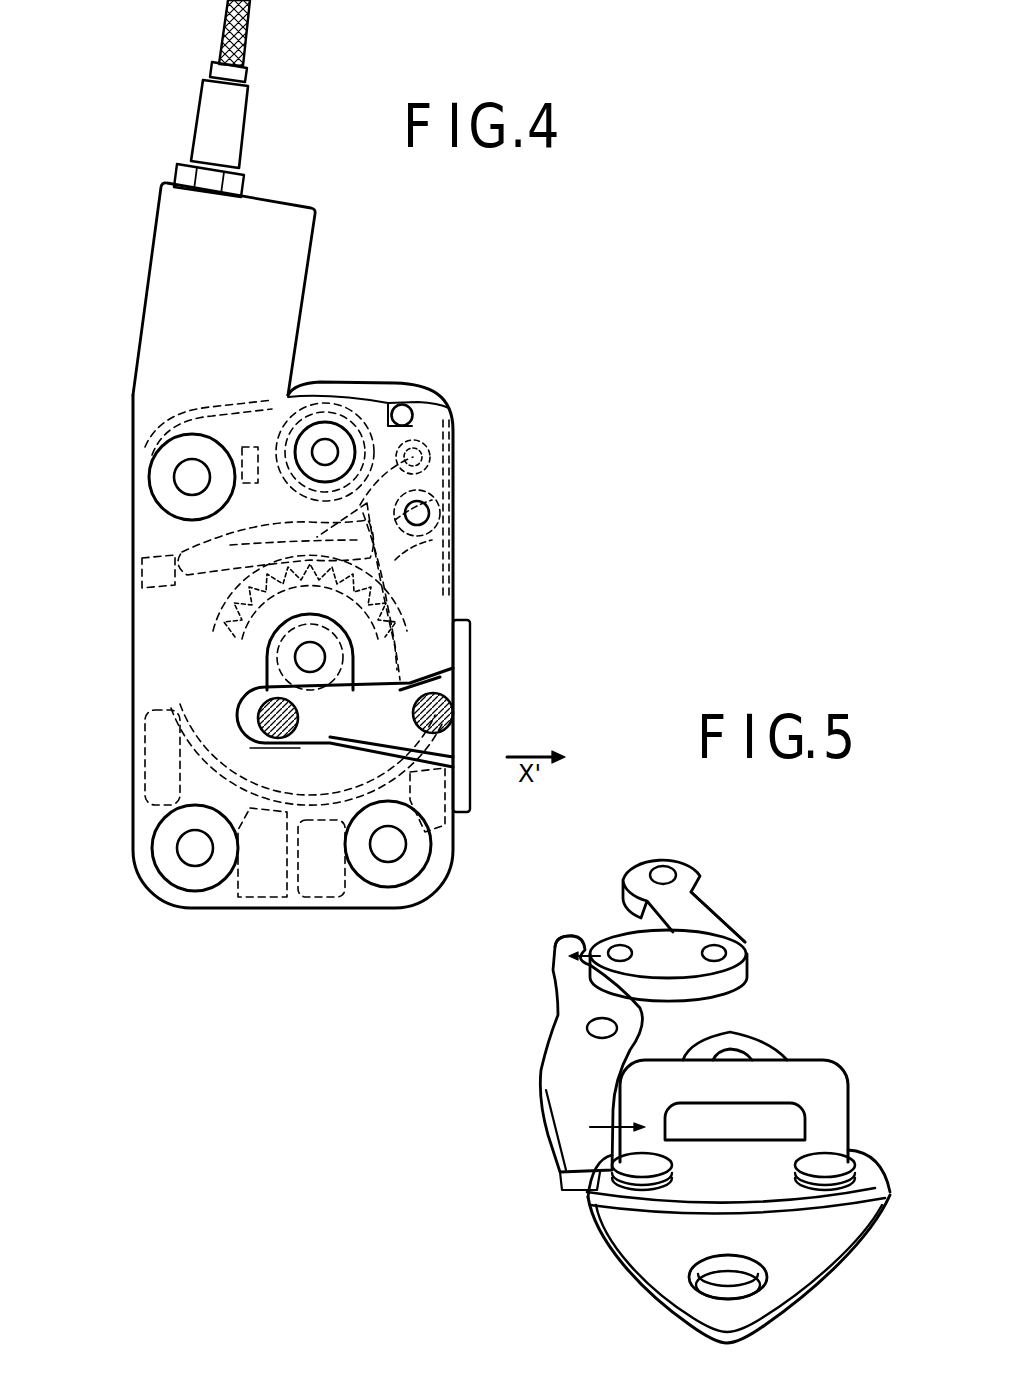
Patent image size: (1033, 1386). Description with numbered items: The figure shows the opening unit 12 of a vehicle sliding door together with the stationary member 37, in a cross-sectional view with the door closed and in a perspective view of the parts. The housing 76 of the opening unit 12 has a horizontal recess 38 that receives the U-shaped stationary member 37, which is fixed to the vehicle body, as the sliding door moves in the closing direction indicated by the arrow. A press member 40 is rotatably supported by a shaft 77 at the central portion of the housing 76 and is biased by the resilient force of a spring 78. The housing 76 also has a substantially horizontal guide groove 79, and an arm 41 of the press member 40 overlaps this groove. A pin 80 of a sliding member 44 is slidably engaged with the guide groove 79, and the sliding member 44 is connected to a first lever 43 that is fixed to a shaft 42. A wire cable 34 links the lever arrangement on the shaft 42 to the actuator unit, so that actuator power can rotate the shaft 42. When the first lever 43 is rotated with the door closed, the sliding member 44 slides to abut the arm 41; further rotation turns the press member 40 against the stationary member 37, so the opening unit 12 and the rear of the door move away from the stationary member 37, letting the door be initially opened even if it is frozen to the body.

In FIG. 4, the opening unit 12 is at (440, 343).
In FIG. 4, the wire cable 34 is at (243, 32).
In FIG. 4, the stationary member 37 is at (432, 712).
In FIG. 5, the stationary member 37 is at (770, 1085).
In FIG. 4, the horizontal recess 38 is at (297, 743).
In FIG. 4, the press member 40 is at (383, 600).
In FIG. 5, the press member 40 is at (575, 1080).
In FIG. 4, the arm 41 is at (367, 503).
In FIG. 5, the arm 41 is at (568, 947).
In FIG. 4, the shaft 42 is at (325, 452).
In FIG. 5, the shaft 42 is at (663, 875).
In FIG. 4, the first lever 43 is at (378, 457).
In FIG. 5, the first lever 43 is at (693, 910).
In FIG. 4, the sliding member 44 is at (432, 485).
In FIG. 5, the sliding member 44 is at (673, 957).
In FIG. 4, the housing 76 is at (440, 835).
In FIG. 4, the shaft 77 is at (310, 657).
In FIG. 5, the shaft 77 is at (602, 1028).
In FIG. 4, the spring 78 is at (247, 618).
In FIG. 4, the guide groove 79 is at (237, 543).
In FIG. 4, the pin 80 is at (417, 516).
In FIG. 5, the pin 80 is at (618, 950).